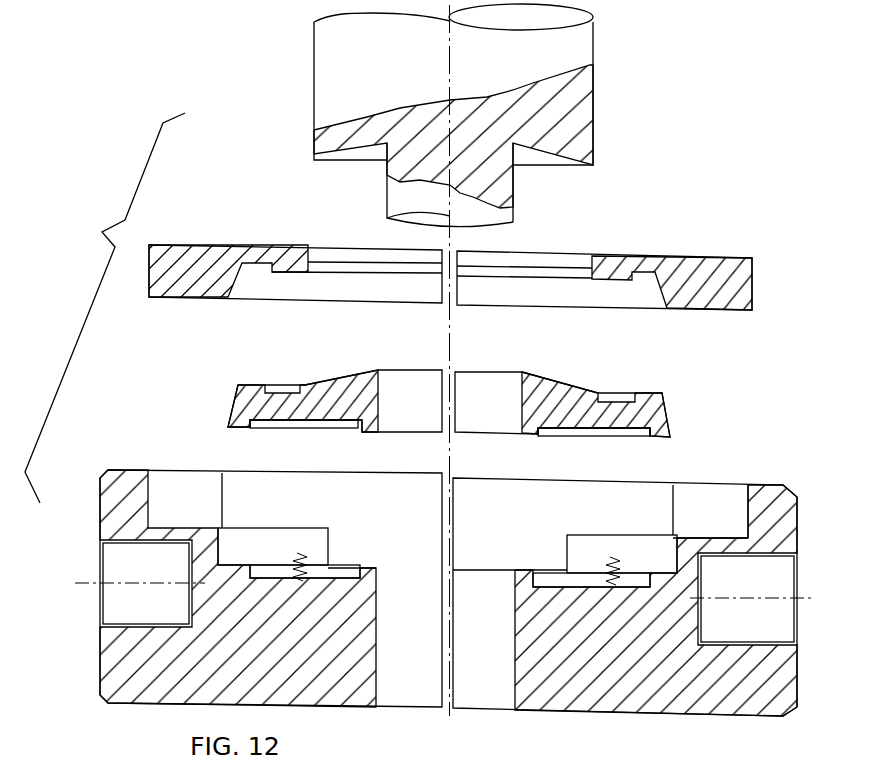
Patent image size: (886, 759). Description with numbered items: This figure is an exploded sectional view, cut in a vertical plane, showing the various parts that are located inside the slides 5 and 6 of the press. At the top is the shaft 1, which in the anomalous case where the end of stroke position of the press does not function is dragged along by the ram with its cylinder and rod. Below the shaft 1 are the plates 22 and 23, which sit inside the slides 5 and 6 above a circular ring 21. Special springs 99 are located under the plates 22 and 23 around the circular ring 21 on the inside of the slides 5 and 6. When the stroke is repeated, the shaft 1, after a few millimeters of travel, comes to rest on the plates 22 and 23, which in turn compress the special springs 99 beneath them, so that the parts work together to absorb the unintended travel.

The shaft 1 is at (398, 86).
The slide 5 is at (258, 588).
The slide 6 is at (632, 597).
The circular ring 21 is at (336, 425).
The plate 22 is at (366, 398).
The plate 23 is at (582, 410).
The special springs 99 is at (290, 559).